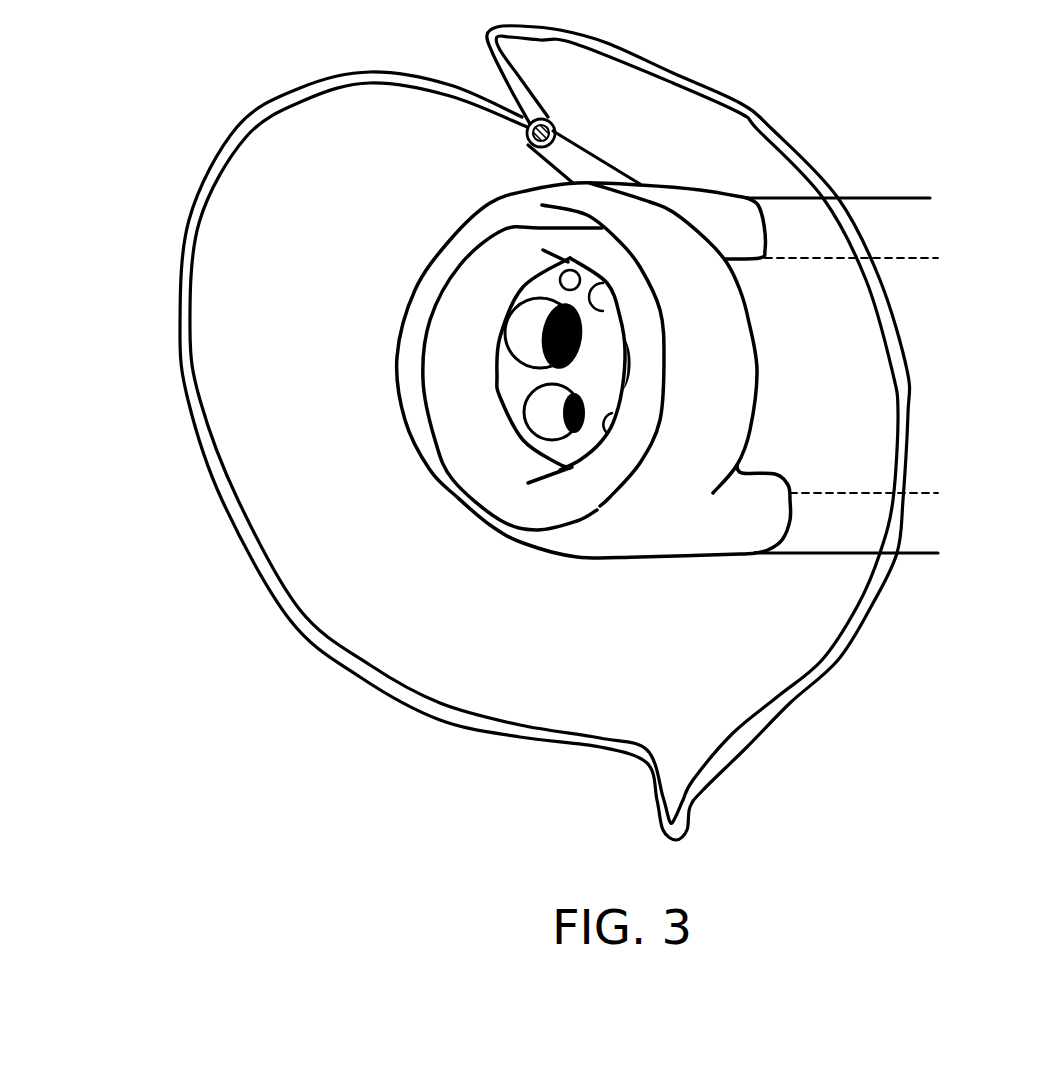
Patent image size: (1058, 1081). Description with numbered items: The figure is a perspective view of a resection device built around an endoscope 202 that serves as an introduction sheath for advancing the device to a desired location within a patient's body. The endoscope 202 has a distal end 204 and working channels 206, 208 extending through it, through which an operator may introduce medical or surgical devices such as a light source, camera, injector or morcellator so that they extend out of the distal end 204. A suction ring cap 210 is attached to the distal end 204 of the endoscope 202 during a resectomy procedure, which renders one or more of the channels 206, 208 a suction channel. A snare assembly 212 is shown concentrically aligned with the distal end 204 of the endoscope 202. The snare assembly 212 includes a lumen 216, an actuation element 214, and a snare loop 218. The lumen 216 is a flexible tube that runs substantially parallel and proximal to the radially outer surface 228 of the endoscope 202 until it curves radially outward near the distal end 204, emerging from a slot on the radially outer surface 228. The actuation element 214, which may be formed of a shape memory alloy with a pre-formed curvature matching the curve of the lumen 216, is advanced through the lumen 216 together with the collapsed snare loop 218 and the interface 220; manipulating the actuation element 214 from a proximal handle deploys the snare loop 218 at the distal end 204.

The endoscope 202 is at (917, 556).
The distal end 204 is at (790, 562).
The working channel 206 is at (540, 327).
The working channel 208 is at (555, 412).
The suction ring cap 210 is at (619, 558).
The snare assembly 212 is at (163, 393).
The actuation element 214 is at (546, 122).
The lumen 216 is at (607, 160).
The snare loop 218 is at (250, 120).
The interface 220 is at (552, 120).
The radially outer surface 228 is at (868, 198).